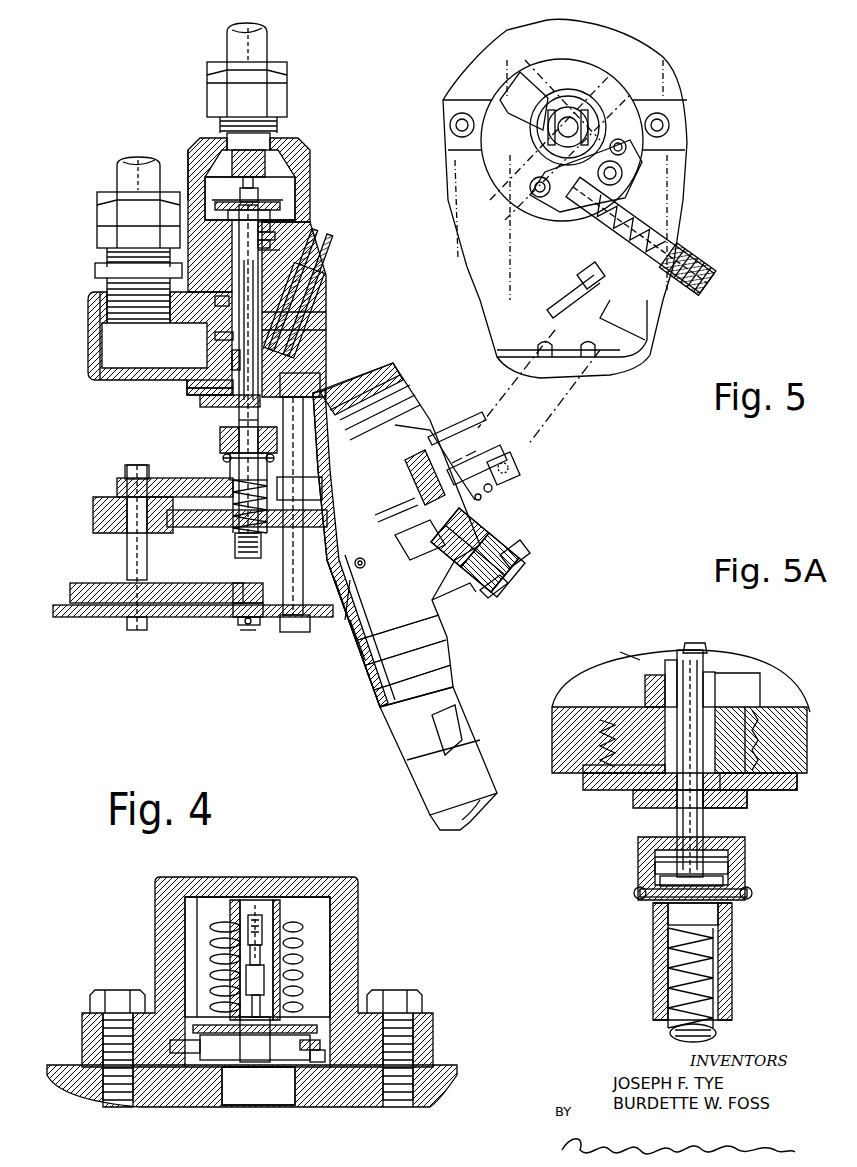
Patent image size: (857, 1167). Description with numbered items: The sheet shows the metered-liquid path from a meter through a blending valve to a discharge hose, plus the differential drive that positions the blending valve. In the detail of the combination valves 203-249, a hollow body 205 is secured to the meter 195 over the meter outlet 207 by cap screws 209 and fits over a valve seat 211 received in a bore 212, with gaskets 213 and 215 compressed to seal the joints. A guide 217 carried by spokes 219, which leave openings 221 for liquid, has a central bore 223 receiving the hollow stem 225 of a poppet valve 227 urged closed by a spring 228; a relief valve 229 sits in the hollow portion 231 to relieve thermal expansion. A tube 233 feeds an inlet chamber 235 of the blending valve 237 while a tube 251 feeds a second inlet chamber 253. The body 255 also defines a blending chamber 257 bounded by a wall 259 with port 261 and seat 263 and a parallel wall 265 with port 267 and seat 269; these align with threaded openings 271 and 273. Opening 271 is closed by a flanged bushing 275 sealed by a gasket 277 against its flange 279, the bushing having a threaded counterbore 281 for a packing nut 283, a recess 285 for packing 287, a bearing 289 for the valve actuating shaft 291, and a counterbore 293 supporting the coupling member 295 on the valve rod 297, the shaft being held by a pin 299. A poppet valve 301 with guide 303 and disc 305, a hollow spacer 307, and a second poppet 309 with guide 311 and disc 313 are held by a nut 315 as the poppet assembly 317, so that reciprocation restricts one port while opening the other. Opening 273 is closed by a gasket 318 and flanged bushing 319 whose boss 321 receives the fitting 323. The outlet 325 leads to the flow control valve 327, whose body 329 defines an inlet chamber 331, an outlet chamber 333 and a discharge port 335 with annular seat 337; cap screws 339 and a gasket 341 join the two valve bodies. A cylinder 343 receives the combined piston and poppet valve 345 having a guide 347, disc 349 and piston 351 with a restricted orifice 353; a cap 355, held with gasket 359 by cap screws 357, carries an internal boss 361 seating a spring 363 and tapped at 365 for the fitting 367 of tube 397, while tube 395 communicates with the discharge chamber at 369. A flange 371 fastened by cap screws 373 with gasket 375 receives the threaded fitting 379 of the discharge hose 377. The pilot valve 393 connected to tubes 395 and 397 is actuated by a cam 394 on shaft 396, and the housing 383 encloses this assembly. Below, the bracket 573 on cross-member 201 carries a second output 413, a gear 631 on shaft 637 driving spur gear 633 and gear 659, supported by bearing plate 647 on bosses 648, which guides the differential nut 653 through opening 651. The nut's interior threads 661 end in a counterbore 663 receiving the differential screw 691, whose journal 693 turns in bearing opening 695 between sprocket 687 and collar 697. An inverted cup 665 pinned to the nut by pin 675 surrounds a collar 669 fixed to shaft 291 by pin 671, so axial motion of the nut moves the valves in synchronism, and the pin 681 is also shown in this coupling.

In FIG. 4, the positive displacement meter 195 is at (442, 1087).
In FIG. 4, the cross-member 201 is at (90, 617).
In FIG. 4, the combination poppet and pressure relief valves 203-249 is at (362, 898).
In FIG. 4, the hollow body 205 is at (347, 937).
In FIG. 4, the meter outlet 207 is at (257, 1093).
In FIG. 4, the cap screws 209 is at (110, 1003).
In FIG. 4, the valve seat 211 is at (337, 1053).
In FIG. 4, the bore 212 is at (312, 1053).
In FIG. 4, the gasket 213 is at (323, 1062).
In FIG. 4, the gasket 215 is at (175, 1053).
In FIG. 4, the guide 217 is at (230, 928).
In FIG. 4, the spokes 219 is at (303, 907).
In FIG. 4, the openings 221 is at (200, 903).
In FIG. 4, the central bore 223 is at (250, 912).
In FIG. 4, the hollow stem 225 is at (250, 967).
In FIG. 4, the poppet valve 227 is at (320, 1030).
In FIG. 4, the spring 228 is at (213, 990).
In FIG. 4, the relief valve 229 is at (265, 995).
In FIG. 4, the hollow portion 231 is at (263, 922).
In FIG. 4, the tube 233 is at (127, 182).
In FIG. 4, the inlet chamber 235 is at (107, 342).
In FIG. 5A, the inlet chamber 235 is at (587, 683).
In FIG. 4, the blending valve 237 is at (312, 177).
In FIG. 5A, the blending valve 237 is at (553, 688).
In FIG. 4, the tube 251 is at (250, 45).
In FIG. 4, the second inlet chamber 253 is at (277, 192).
In FIG. 4, the body 255 is at (87, 312).
In FIG. 4, the blending chamber 257 is at (333, 278).
In FIG. 4, the wall 259 is at (222, 306).
In FIG. 4, the port 261 is at (290, 312).
In FIG. 4, the valve seat 263 is at (233, 336).
In FIG. 4, the wall 265 is at (276, 230).
In FIG. 4, the port 267 is at (270, 248).
In FIG. 4, the valve seat 269 is at (272, 224).
In FIG. 4, the threaded opening 271 is at (236, 358).
In FIG. 5A, the threaded opening 271 is at (643, 733).
In FIG. 4, the threaded opening 273 is at (243, 190).
In FIG. 4, the flanged bushing 275 is at (190, 400).
In FIG. 5A, the flanged bushing 275 is at (595, 783).
In FIG. 4, the gasket 277 is at (192, 386).
In FIG. 5A, the gasket 277 is at (610, 767).
In FIG. 4, the flange 279 is at (205, 404).
In FIG. 5A, the flange 279 is at (633, 790).
In FIG. 5A, the threaded axial counterbore 281 is at (740, 785).
In FIG. 4, the packing nut 283 is at (318, 393).
In FIG. 5A, the packing nut 283 is at (730, 807).
In FIG. 5A, the recess 285 is at (755, 718).
In FIG. 5A, the packing 287 is at (763, 685).
In FIG. 5A, the bearing 289 is at (707, 707).
In FIG. 4, the valve actuating shaft 291 is at (240, 422).
In FIG. 5A, the valve actuating shaft 291 is at (683, 817).
In FIG. 5A, the counterbore 293 is at (652, 700).
In FIG. 5A, the coupling member 295 is at (692, 717).
In FIG. 4, the valve rod 297 is at (247, 253).
In FIG. 5A, the valve rod 297 is at (705, 638).
In FIG. 5A, the pin 299 is at (667, 692).
In FIG. 4, the poppet valve 301 is at (280, 298).
In FIG. 4, the guide 303 is at (240, 300).
In FIG. 4, the valve disc 305 is at (290, 330).
In FIG. 4, the hollow spacer 307 is at (258, 280).
In FIG. 4, the second poppet 309 is at (275, 208).
In FIG. 4, the guide 311 is at (272, 238).
In FIG. 4, the valve disc 313 is at (217, 207).
In FIG. 4, the nut 315 is at (250, 208).
In FIG. 4, the poppet assembly 317 is at (263, 195).
In FIG. 4, the gasket 318 is at (220, 163).
In FIG. 4, the flanged bushing 319 is at (177, 113).
In FIG. 4, the threaded male boss 321 is at (283, 122).
In FIG. 4, the fitting 323 is at (227, 72).
In FIG. 4, the outlet 325 is at (362, 320).
In FIG. 4, the flow control valve 327 is at (345, 640).
In FIG. 4, the body 329 is at (367, 657).
In FIG. 4, the inlet chamber 331 is at (390, 430).
In FIG. 4, the outlet chamber 333 is at (400, 641).
In FIG. 4, the discharge port 335 is at (375, 575).
In FIG. 4, the annular valve seat 337 is at (405, 477).
In FIG. 4, the cap screws 339 is at (365, 395).
In FIG. 4, the gasket 341 is at (380, 365).
In FIG. 4, the cylinder 343 is at (480, 542).
In FIG. 4, the combined piston and poppet valve 345 is at (449, 588).
In FIG. 4, the guide 347 is at (382, 520).
In FIG. 4, the valve disc 349 is at (420, 541).
In FIG. 4, the piston 351 is at (430, 435).
In FIG. 4, the restricted orifice 353 is at (470, 527).
In FIG. 4, the cap 355 is at (492, 592).
In FIG. 4, the cap screws 357 is at (505, 578).
In FIG. 4, the gasket 359 is at (512, 560).
In FIG. 4, the internal boss 361 is at (492, 488).
In FIG. 4, the spring 363 is at (482, 497).
In FIG. 4, the drilled and tapped hole 365 is at (473, 477).
In FIG. 4, the fitting 367 is at (513, 470).
In FIG. 4, the communication point 369 is at (364, 600).
In FIG. 4, the flange 371 is at (445, 657).
In FIG. 4, the cap screws 373 is at (449, 673).
In FIG. 4, the gasket 375 is at (432, 628).
In FIG. 4, the discharge hose 377 is at (430, 805).
In FIG. 4, the threaded male fitting 379 is at (440, 747).
In FIG. 5, the housing 383 is at (665, 70).
In FIG. 5, the pilot valve 393 is at (712, 283).
In FIG. 5, the cam 394 is at (527, 97).
In FIG. 4, the tube 395 is at (482, 417).
In FIG. 5, the tube 395 is at (577, 290).
In FIG. 5, the shaft 396 is at (568, 128).
In FIG. 4, the tube 397 is at (532, 447).
In FIG. 5, the tube 397 is at (625, 342).
In FIG. 4, the second output 413 is at (225, 665).
In FIG. 4, the bracket 573 is at (78, 588).
In FIG. 4, the miter gear 631 is at (113, 567).
In FIG. 4, the spur gear 633 is at (110, 510).
In FIG. 4, the shaft 637 is at (135, 628).
In FIG. 4, the bearing plate 647 is at (133, 480).
In FIG. 4, the bosses 648 is at (283, 600).
In FIG. 4, the opening 651 is at (231, 487).
In FIG. 4, the differential nut 653 is at (231, 460).
In FIG. 5A, the differential nut 653 is at (645, 920).
In FIG. 4, the spur gear 659 is at (213, 520).
In FIG. 5A, the interior threads 661 is at (690, 967).
In FIG. 5A, the counterbore 663 is at (700, 913).
In FIG. 4, the inverted cylindrical cup 665 is at (218, 433).
In FIG. 5A, the inverted cylindrical cup 665 is at (636, 852).
In FIG. 5A, the circular collar 669 is at (657, 866).
In FIG. 5A, the pin 671 is at (717, 857).
In FIG. 5A, the pin 675 is at (705, 884).
In FIG. 5A, the pin 681 is at (634, 893).
In FIG. 4, the sprocket 687 is at (227, 612).
In FIG. 4, the differential screw 691 is at (240, 545).
In FIG. 5A, the differential screw 691 is at (718, 1033).
In FIG. 4, the journal 693 is at (240, 618).
In FIG. 4, the bearing opening 695 is at (250, 622).
In FIG. 4, the collar 697 is at (257, 624).